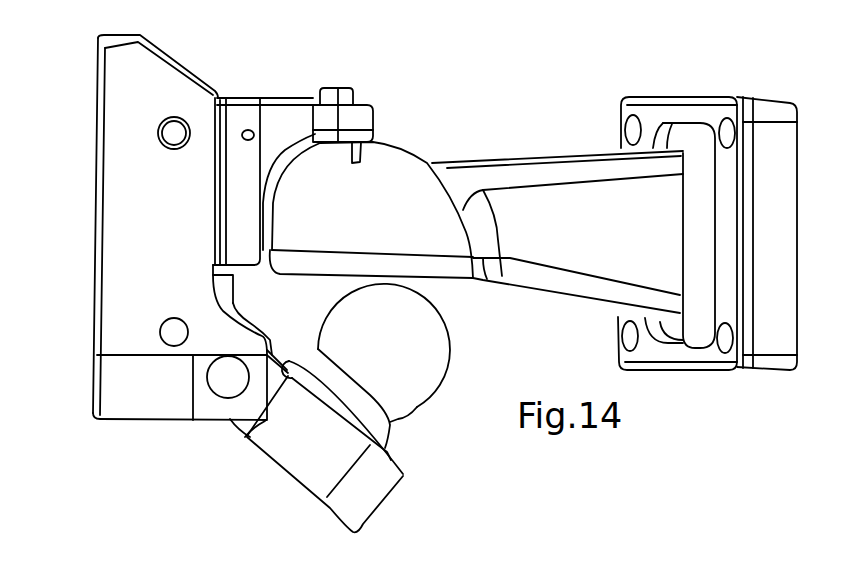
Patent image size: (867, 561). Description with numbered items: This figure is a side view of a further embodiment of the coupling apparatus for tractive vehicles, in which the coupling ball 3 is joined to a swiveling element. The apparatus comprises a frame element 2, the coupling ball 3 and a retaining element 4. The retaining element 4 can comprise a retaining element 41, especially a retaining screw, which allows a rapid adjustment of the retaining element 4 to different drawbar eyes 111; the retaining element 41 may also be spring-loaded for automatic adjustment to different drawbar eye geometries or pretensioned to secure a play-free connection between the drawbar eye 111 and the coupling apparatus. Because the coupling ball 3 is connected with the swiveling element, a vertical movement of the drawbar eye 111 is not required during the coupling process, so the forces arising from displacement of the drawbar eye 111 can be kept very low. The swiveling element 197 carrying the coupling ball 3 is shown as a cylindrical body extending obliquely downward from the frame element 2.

The frame element 2 is at (110, 211).
The retaining element 4 is at (292, 120).
The retaining element 41 is at (358, 163).
The drawbar eye 111 is at (422, 228).
The coupling ball 3 is at (430, 352).
The cylindrical shaft 197 is at (377, 485).